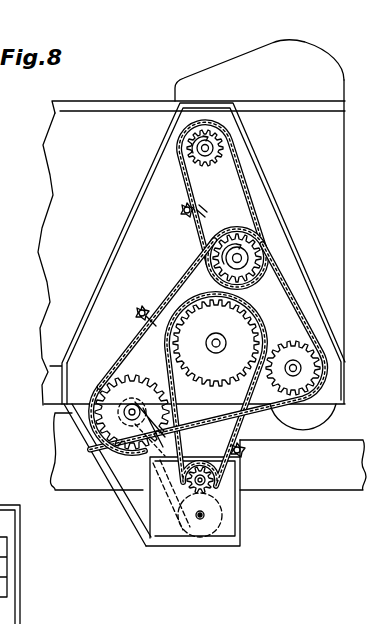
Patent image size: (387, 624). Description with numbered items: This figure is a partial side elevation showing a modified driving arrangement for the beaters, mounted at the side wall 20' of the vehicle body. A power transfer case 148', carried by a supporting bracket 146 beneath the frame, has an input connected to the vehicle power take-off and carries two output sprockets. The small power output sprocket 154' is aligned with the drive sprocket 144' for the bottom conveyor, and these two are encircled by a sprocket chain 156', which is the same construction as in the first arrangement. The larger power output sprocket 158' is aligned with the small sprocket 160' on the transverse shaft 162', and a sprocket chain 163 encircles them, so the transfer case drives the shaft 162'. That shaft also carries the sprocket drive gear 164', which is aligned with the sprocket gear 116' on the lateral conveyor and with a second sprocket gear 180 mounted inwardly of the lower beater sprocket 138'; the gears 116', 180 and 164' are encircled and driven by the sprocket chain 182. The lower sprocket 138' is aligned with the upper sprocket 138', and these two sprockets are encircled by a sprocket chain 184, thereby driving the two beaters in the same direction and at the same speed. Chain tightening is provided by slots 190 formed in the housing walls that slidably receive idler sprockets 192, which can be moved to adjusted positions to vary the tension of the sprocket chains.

The side wall 20' is at (183, 332).
The sprocket gear 138' is at (157, 360).
The sprocket chain 184 is at (245, 188).
The second sprocket gear 180 is at (275, 257).
The sprocket chain 182 is at (170, 293).
The drive sprocket 144' is at (256, 319).
The sprocket gear 116' is at (322, 367).
The slot 190 is at (206, 210).
The idler sprocket 192 is at (184, 220).
The small sprocket 160' is at (132, 412).
The transverse shaft 162' is at (104, 439).
The sprocket drive gear 164' is at (80, 420).
The sprocket chain 163 is at (147, 463).
The supporting bracket 146 is at (128, 520).
The power transfer case 148' is at (189, 512).
The larger power output sprocket 158' is at (210, 539).
The small power output sprocket 154' is at (236, 480).
The sprocket chain 156' is at (283, 430).